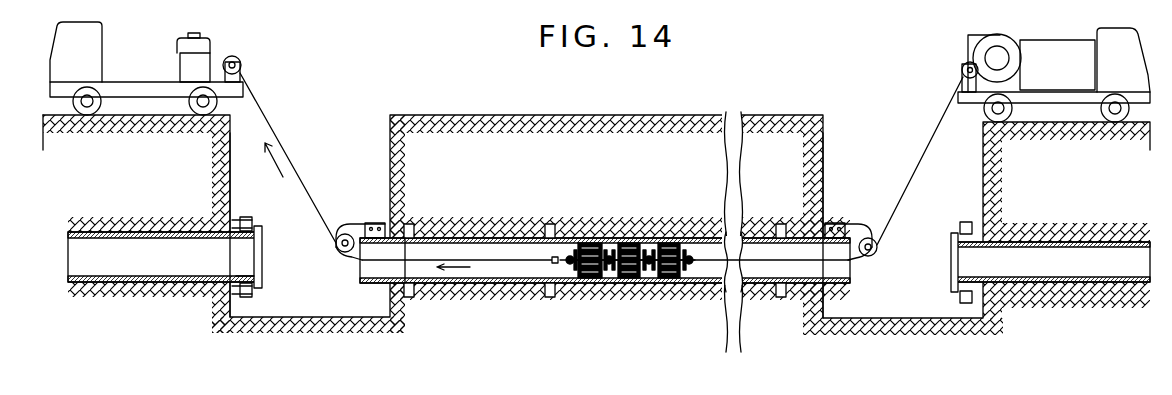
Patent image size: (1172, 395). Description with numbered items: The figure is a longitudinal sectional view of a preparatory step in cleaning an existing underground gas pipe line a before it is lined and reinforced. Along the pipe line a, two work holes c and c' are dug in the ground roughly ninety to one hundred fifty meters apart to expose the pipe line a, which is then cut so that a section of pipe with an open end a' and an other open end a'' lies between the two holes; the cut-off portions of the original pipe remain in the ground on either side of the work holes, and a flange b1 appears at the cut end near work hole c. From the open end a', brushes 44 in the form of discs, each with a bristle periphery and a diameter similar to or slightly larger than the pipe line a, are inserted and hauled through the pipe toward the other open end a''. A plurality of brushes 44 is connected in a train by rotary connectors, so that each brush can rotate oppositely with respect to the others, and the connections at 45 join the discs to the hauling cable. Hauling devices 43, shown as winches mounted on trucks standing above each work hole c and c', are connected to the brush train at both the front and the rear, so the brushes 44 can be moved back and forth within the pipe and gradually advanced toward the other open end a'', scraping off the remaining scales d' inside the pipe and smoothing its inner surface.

The hauling device 43 is at (237, 62).
The brushes 44 is at (600, 284).
The pig cup seals 45 is at (607, 242).
The pipe line a is at (609, 251).
The open end a' is at (593, 260).
The other open end a'' is at (851, 251).
The pipe flange b1 is at (208, 243).
The work hole c is at (285, 213).
The work hole c' is at (842, 214).
The pipe wall opening d' is at (463, 279).